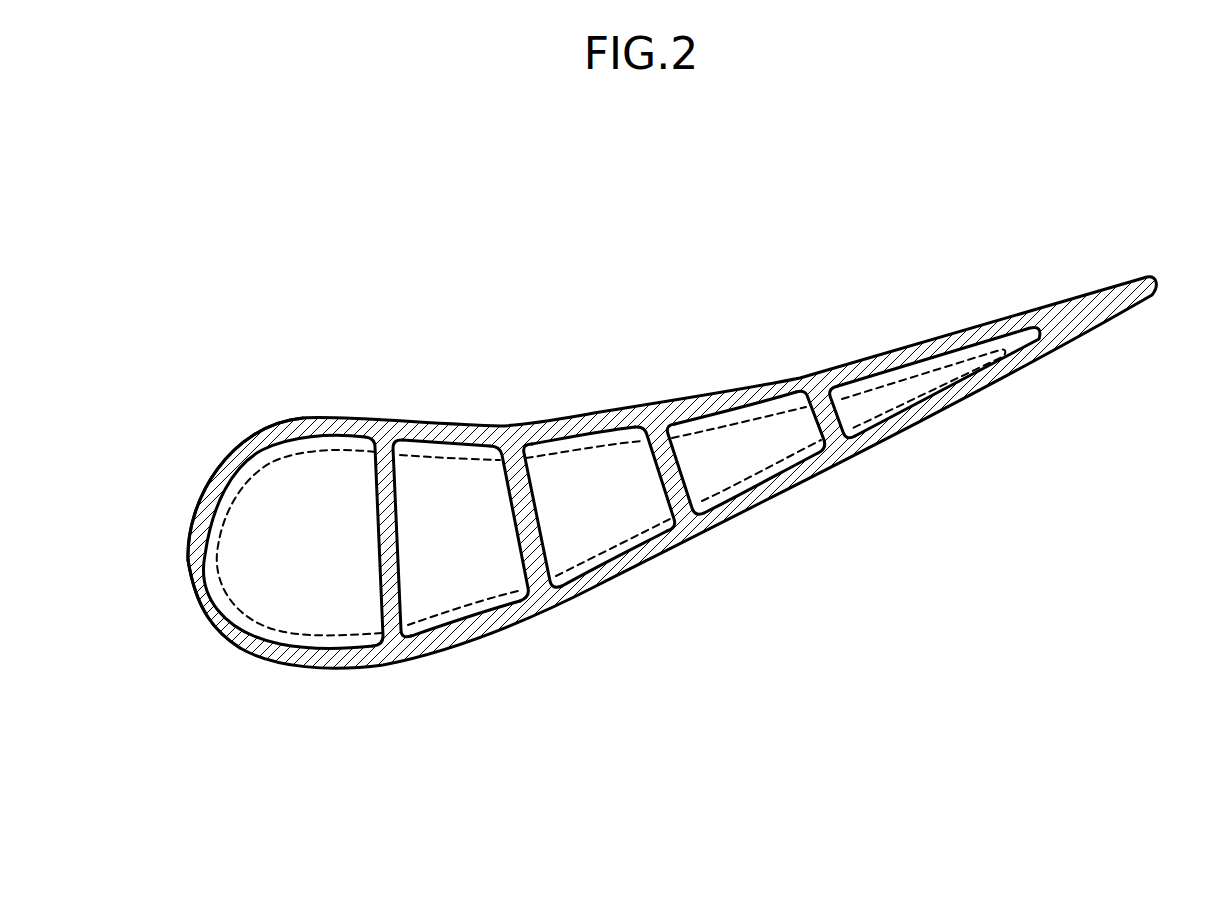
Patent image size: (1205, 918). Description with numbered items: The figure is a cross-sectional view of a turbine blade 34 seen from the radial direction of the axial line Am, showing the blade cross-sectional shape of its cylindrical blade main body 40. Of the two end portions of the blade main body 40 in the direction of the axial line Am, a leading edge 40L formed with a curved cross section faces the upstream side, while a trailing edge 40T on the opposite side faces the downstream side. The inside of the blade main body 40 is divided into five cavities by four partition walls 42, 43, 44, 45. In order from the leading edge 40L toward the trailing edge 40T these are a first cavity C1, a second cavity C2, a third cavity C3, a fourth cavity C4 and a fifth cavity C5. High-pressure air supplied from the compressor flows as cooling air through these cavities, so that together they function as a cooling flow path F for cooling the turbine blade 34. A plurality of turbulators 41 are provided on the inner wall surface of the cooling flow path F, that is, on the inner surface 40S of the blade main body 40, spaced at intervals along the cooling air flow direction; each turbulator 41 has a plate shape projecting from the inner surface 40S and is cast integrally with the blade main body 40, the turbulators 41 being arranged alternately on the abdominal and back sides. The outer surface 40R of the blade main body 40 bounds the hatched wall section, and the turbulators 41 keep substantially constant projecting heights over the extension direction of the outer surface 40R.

The turbine blade 34 is at (478, 787).
The blade main body 40 is at (420, 652).
The inner surface 40S is at (213, 530).
The outer surface 40R is at (221, 633).
The leading edge 40L is at (176, 616).
The trailing edge 40T is at (1153, 311).
The turbulator 41 is at (247, 451).
The partition wall 42 is at (382, 582).
The partition wall 43 is at (528, 570).
The partition wall 44 is at (670, 496).
The partition wall 45 is at (822, 430).
The first cavity C1 is at (322, 510).
The second cavity C2 is at (417, 493).
The third cavity C3 is at (553, 463).
The fourth cavity C4 is at (697, 447).
The fifth cavity C5 is at (865, 400).
The cooling flow path F is at (607, 206).
The axial line Am is at (760, 733).